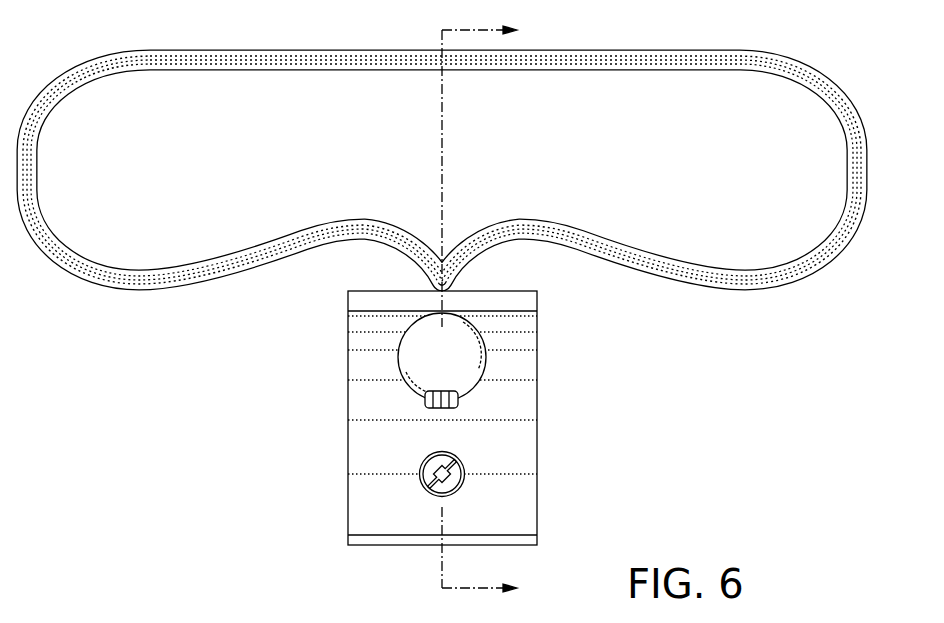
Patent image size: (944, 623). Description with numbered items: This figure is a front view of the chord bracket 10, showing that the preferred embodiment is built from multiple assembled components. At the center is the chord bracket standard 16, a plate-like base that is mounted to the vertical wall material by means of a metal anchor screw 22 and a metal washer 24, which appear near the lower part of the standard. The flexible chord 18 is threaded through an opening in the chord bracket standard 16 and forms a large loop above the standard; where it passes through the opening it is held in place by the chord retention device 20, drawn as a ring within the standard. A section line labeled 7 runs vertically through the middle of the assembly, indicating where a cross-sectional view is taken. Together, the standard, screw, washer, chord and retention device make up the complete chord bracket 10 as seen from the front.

The chord bracket 10 is at (585, 393).
The chord bracket standard 16 is at (348, 468).
The flexible chord 18 is at (523, 73).
The chord retention device 20 is at (402, 388).
The metal anchor screw 22 is at (422, 482).
The metal washer 24 is at (428, 492).
The section line 7- 7 is at (496, 309).